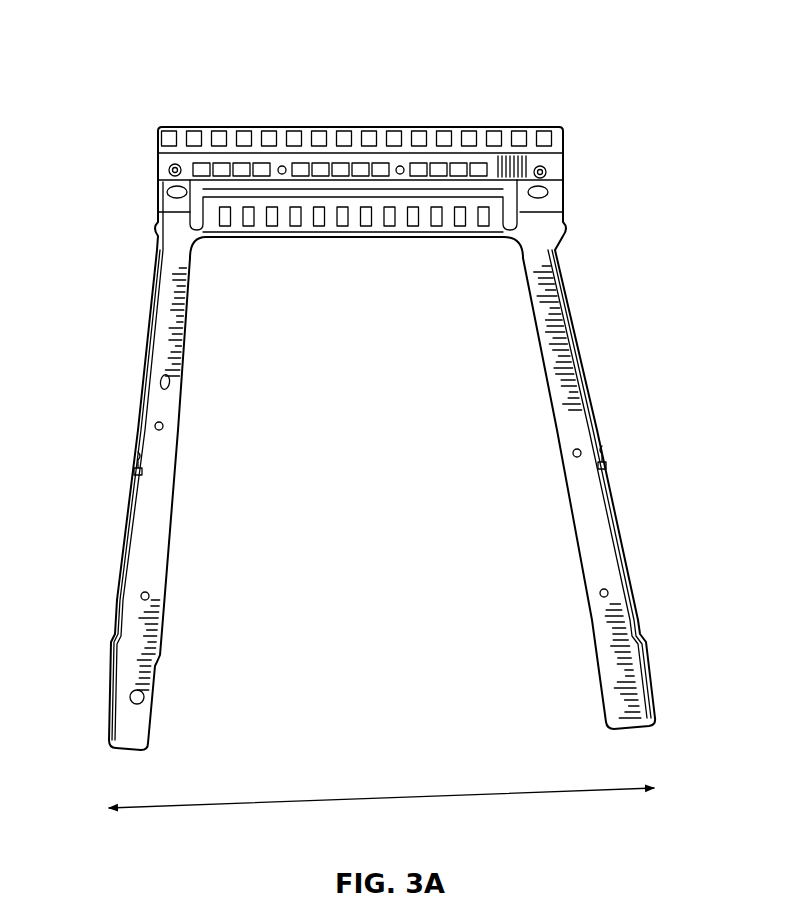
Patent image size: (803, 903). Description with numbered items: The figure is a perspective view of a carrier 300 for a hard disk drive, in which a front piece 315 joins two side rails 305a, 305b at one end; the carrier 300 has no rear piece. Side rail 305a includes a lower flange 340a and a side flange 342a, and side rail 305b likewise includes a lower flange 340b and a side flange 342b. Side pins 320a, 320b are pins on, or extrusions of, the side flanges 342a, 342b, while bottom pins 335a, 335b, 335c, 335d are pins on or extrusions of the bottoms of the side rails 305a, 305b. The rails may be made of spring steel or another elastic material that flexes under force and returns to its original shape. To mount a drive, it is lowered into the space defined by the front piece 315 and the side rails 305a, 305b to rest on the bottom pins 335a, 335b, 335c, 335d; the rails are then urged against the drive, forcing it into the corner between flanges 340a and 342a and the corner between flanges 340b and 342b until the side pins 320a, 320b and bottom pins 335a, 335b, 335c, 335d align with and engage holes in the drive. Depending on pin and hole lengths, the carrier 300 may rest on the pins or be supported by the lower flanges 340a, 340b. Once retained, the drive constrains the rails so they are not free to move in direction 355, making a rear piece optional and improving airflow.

The carrier 300 is at (208, 33).
The front piece 315 is at (430, 127).
The side rail 305a is at (124, 764).
The side rail 305b is at (640, 746).
The side pin 320a is at (135, 466).
The side pin 320b is at (606, 463).
The bottom pin 335a is at (163, 423).
The bottom pin 335b is at (149, 593).
The bottom pin 335c is at (573, 450).
The bottom pin 335d is at (600, 590).
The lower flange 340a is at (162, 494).
The lower flange 340b is at (586, 521).
The side flange 342a is at (133, 507).
The side flange 342b is at (618, 512).
The direction 355 is at (350, 800).